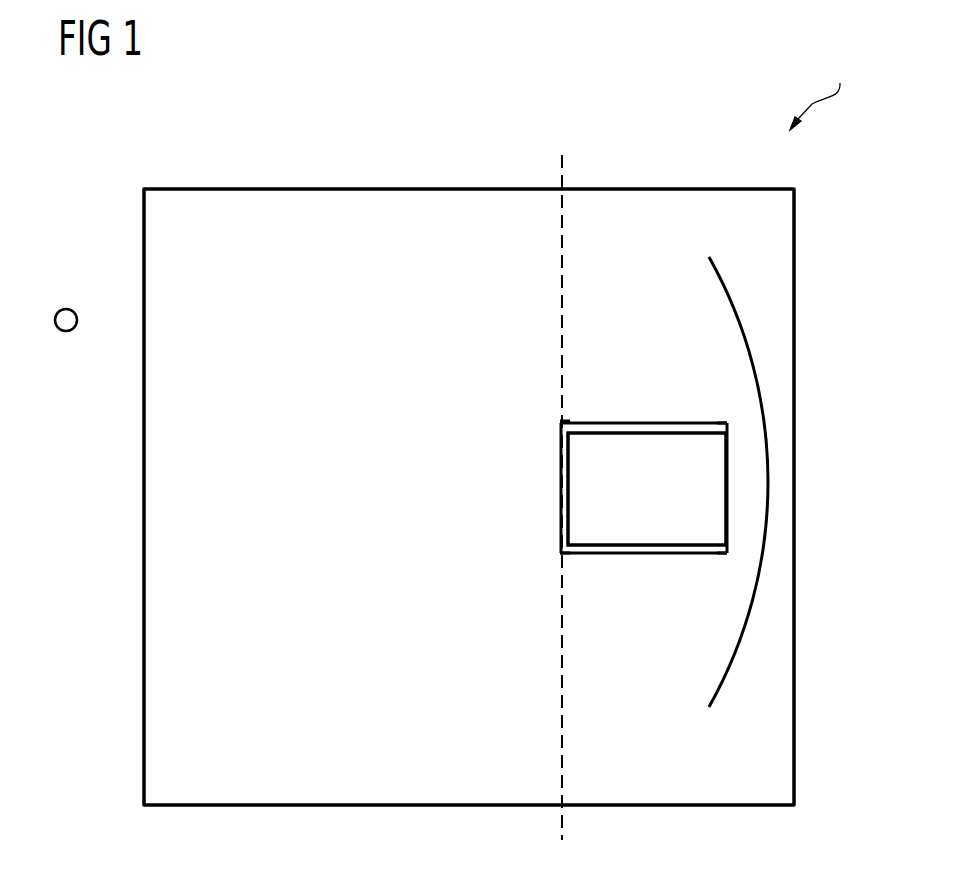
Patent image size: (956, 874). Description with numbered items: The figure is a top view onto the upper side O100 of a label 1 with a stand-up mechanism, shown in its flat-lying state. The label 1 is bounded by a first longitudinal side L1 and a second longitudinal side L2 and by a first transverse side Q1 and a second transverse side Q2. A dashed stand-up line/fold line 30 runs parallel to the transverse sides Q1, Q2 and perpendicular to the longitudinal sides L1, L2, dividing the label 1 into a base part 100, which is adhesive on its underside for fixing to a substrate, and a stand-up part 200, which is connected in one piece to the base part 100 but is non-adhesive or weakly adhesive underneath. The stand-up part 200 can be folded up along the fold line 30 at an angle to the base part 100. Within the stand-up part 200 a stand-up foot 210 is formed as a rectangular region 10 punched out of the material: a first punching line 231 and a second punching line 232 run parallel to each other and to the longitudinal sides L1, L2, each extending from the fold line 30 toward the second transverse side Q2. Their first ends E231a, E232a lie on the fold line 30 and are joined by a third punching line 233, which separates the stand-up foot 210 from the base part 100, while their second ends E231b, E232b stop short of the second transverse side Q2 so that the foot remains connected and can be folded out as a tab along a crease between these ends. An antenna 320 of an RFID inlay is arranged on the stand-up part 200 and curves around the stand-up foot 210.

The label 1 is at (816, 89).
The base part 100 is at (305, 197).
The stand-up part 200 is at (667, 198).
The stand-up line/fold line 30 is at (562, 255).
The antenna 320 is at (740, 302).
The upper side O100 is at (157, 333).
The first longitudinal side L1 is at (469, 169).
The second longitudinal side L2 is at (469, 826).
The first transverse side Q1 is at (128, 497).
The second transverse side Q2 is at (811, 497).
The region 10 is at (575, 515).
The stand-up foot 210 is at (647, 489).
The first punching line 231 is at (648, 423).
The second punching line 232 is at (648, 553).
The third punching line 233 is at (560, 475).
The first end of the first punching line E231a is at (560, 423).
The second end of the first punching line E231b is at (727, 423).
The first end of the second punching line E232a is at (560, 553).
The second end of the second punching line E232b is at (727, 553).